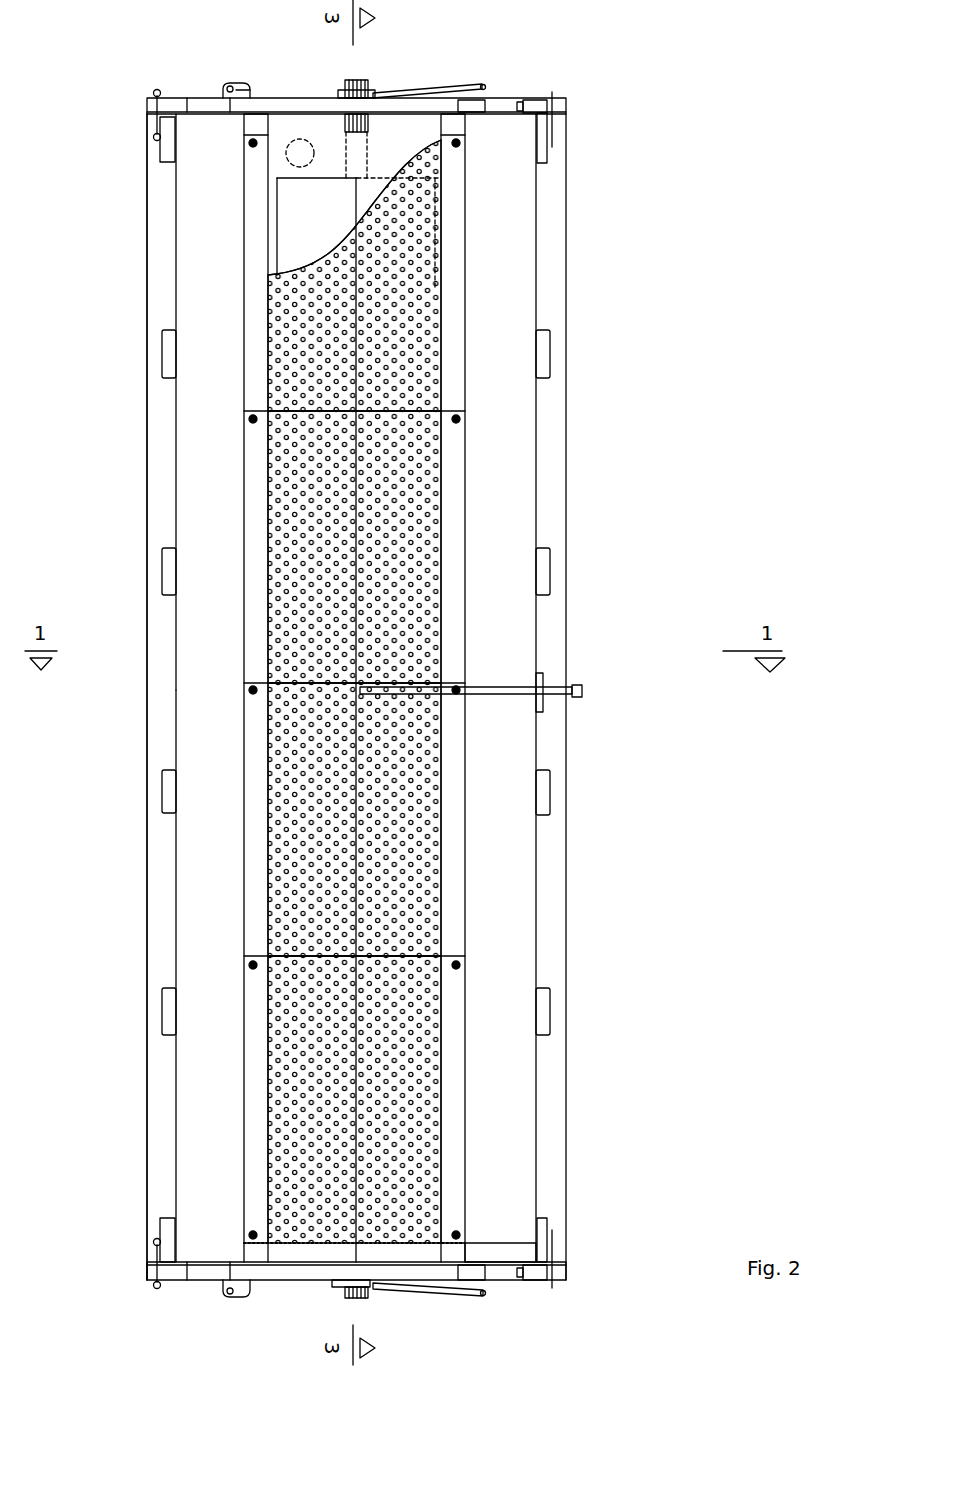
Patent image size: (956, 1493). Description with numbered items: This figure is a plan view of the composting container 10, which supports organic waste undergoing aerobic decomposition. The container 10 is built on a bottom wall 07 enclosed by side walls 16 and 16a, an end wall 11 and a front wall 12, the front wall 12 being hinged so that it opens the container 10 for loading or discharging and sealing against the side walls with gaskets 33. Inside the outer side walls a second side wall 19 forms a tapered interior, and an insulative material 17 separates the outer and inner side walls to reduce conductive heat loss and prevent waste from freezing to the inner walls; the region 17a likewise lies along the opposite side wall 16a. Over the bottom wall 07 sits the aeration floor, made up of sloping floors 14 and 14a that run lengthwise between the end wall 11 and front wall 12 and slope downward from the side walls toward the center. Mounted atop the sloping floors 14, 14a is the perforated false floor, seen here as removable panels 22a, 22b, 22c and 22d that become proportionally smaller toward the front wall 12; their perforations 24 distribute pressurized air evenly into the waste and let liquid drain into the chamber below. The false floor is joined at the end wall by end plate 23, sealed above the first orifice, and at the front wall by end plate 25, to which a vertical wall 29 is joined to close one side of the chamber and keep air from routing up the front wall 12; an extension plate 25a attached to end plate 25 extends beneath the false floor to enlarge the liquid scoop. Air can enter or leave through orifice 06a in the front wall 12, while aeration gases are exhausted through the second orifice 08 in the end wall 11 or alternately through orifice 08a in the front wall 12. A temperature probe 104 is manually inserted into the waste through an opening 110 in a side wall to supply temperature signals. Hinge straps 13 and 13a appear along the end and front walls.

The container 10 is at (568, 296).
The bottom wall 07 is at (146, 684).
The sloping floor 14 is at (220, 1238).
The sloping floor 14a is at (499, 1296).
The end wall 11 is at (545, 1312).
The front wall 12 is at (515, 79).
The bottom hinge strap 13 is at (429, 1312).
The top hinge strap 13a is at (429, 78).
The side wall 16 is at (176, 407).
The insulative material 17 is at (176, 935).
The side wall 16a is at (583, 402).
The right lower rail 17a is at (583, 976).
The second side wall 19 is at (195, 782).
The end plate 23 is at (229, 1100).
The perforations 24 is at (362, 691).
The end plate 25 is at (235, 678).
The extension plate 25a is at (396, 215).
The removable panel 22a is at (396, 1099).
The removable panel 22b is at (384, 819).
The removable panel 22c is at (383, 547).
The removable panel 22d is at (384, 275).
The vertical wall 29 is at (241, 77).
The gaskets 33 is at (133, 158).
The orifice 06a is at (334, 111).
The second orifice 08 is at (286, 1319).
The orifice 08a is at (257, 200).
The temperature probe 104 is at (495, 647).
The opening 110 is at (585, 716).